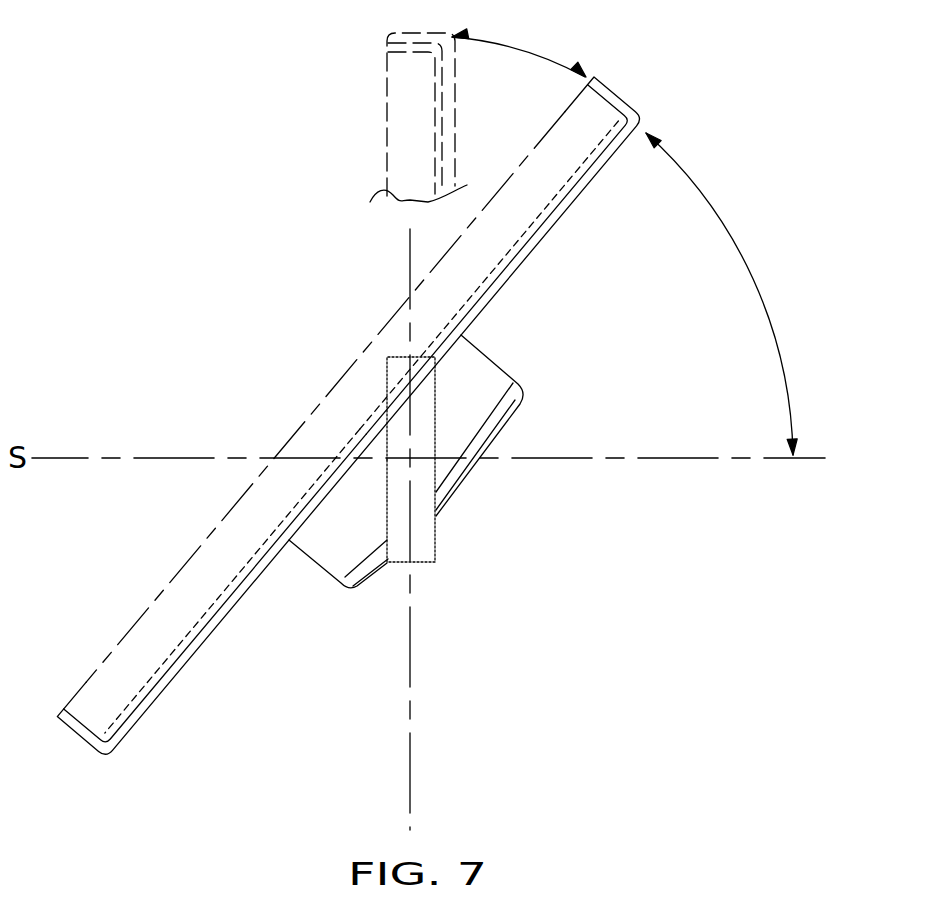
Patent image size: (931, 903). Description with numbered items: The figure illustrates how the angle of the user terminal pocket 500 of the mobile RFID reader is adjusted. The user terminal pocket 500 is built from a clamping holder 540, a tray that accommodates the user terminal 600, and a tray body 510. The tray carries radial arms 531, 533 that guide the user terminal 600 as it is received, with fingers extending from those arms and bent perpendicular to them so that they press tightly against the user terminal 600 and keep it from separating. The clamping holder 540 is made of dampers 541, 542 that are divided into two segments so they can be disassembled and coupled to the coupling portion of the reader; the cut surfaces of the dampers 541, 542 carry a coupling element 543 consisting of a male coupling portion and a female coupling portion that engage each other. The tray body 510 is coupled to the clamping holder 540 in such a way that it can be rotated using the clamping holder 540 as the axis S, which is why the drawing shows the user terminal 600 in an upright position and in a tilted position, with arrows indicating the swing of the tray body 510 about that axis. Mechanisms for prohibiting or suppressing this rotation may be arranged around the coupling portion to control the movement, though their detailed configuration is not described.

The user terminal pocket 500 is at (457, 522).
The tray body 510 is at (333, 540).
The radial arm 531 is at (563, 200).
The radial arm 533 is at (150, 697).
The clamping holder 540 is at (493, 494).
The damper 541 is at (423, 432).
The damper 542 is at (423, 535).
The coupling element 543 is at (398, 455).
The user terminal 600 is at (157, 630).